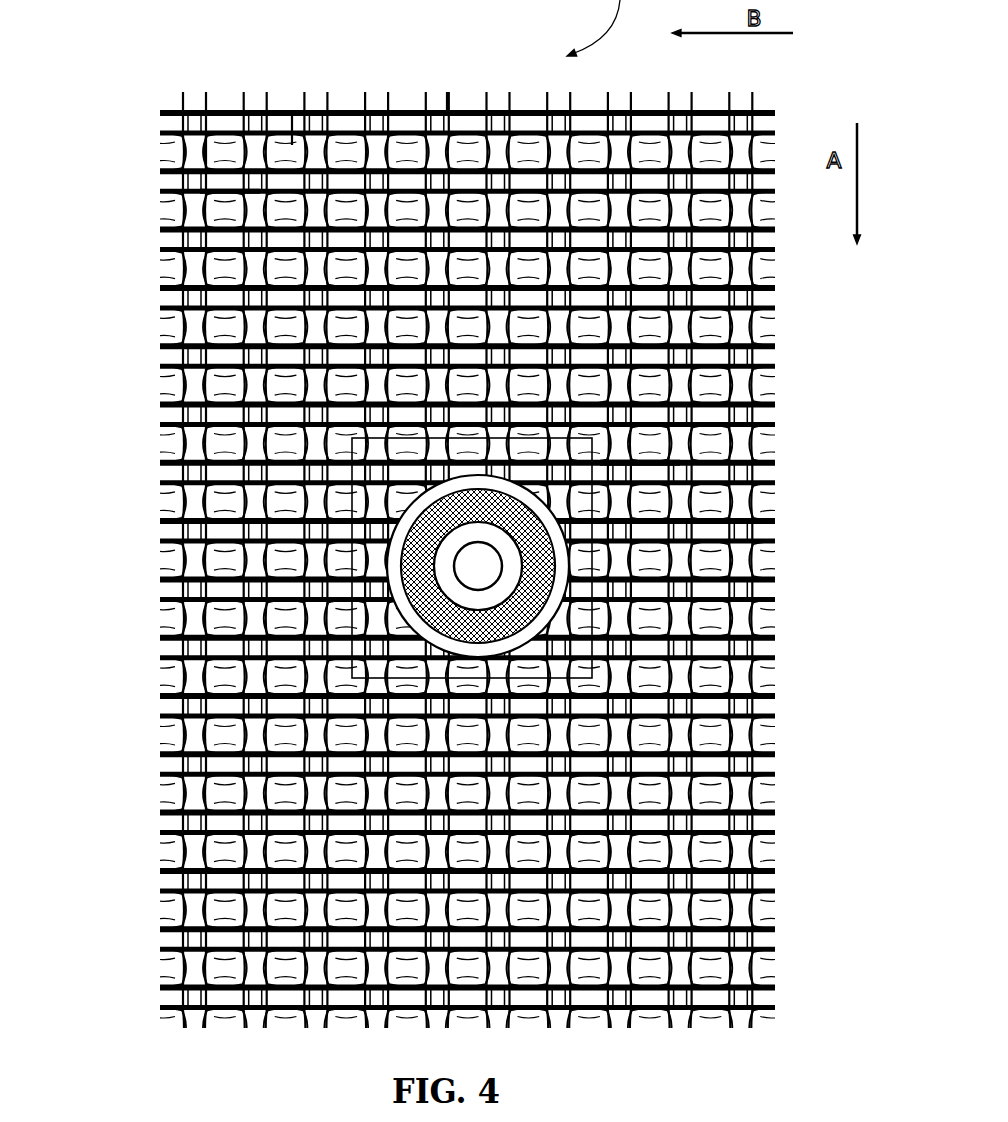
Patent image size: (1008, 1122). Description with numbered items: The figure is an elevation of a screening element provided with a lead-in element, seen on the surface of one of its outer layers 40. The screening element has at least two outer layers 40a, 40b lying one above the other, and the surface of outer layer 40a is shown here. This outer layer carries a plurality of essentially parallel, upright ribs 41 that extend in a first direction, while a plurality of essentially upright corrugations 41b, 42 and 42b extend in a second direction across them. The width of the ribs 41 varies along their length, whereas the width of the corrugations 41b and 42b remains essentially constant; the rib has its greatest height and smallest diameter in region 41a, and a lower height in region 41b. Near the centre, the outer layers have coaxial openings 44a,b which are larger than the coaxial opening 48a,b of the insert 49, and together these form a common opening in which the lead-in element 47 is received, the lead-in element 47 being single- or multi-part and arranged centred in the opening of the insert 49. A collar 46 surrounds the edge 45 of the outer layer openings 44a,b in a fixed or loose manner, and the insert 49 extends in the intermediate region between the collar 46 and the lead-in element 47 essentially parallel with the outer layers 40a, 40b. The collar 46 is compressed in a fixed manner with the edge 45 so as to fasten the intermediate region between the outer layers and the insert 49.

The outer layers 40 is at (625, 449).
The outer layer 40a is at (152, 833).
The outer layer 40b is at (163, 856).
The ribs 41 is at (460, 80).
The region of rib 41a is at (292, 138).
The corrugations 41b is at (190, 154).
The corrugations 42 is at (553, 84).
The corrugations 42b is at (223, 189).
The openings of outer layers 44a,b is at (436, 554).
The edge 45 is at (398, 658).
The collar 46 is at (557, 602).
The lead-in element 47 is at (395, 530).
The opening of insert and common opening 48a,b is at (495, 559).
The insert 49 is at (405, 600).